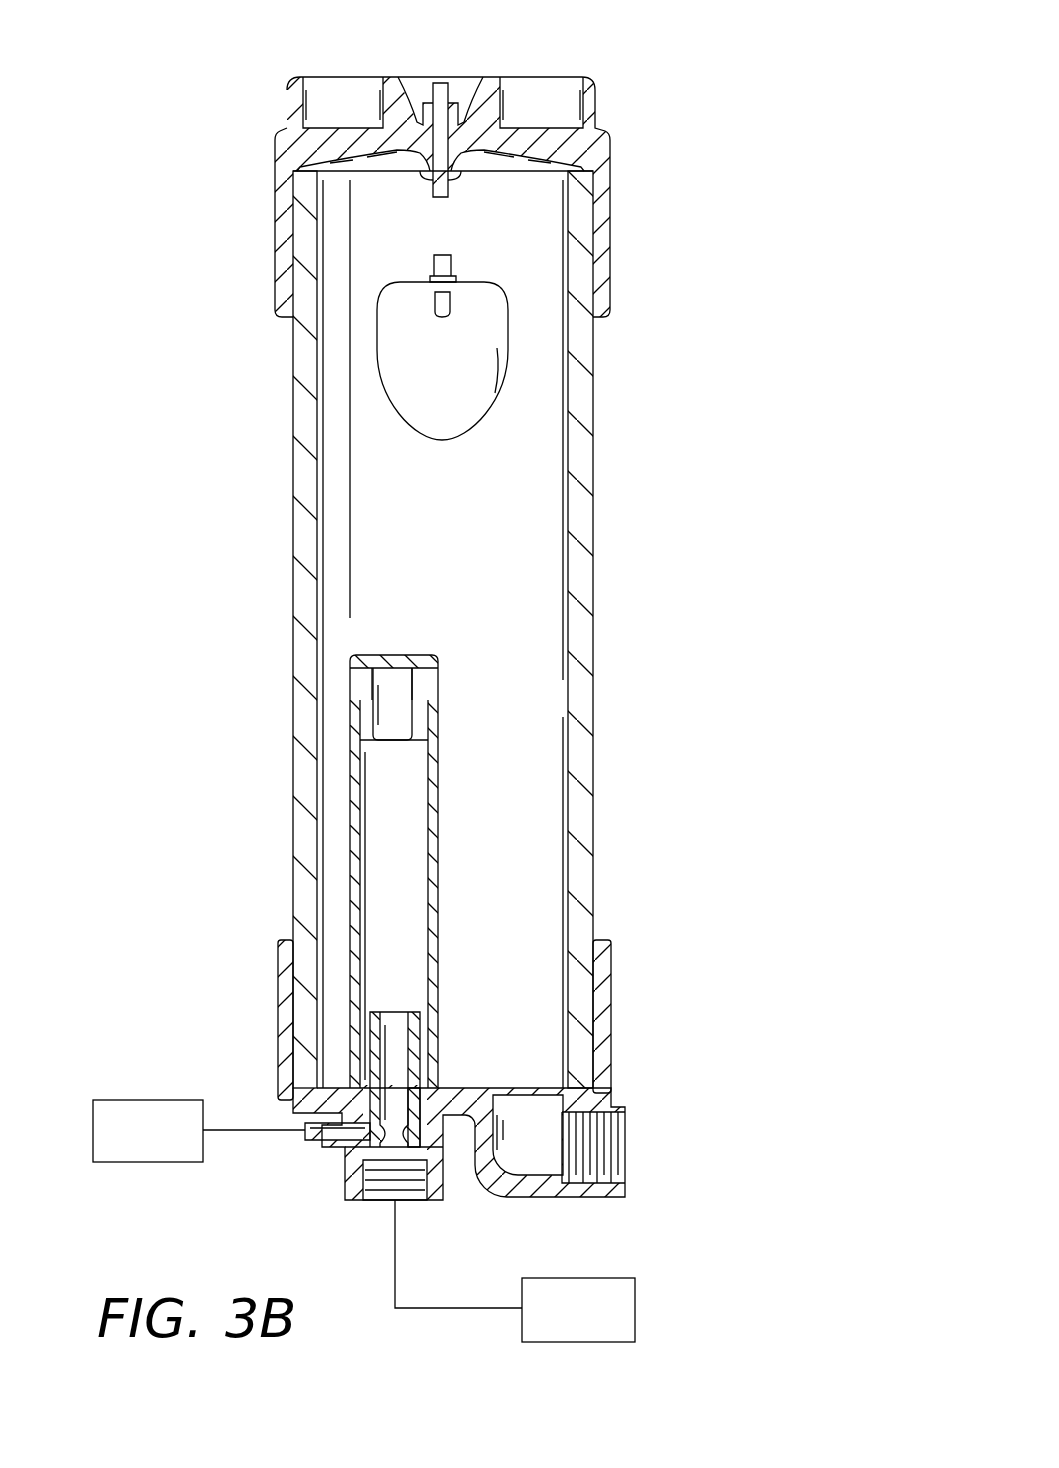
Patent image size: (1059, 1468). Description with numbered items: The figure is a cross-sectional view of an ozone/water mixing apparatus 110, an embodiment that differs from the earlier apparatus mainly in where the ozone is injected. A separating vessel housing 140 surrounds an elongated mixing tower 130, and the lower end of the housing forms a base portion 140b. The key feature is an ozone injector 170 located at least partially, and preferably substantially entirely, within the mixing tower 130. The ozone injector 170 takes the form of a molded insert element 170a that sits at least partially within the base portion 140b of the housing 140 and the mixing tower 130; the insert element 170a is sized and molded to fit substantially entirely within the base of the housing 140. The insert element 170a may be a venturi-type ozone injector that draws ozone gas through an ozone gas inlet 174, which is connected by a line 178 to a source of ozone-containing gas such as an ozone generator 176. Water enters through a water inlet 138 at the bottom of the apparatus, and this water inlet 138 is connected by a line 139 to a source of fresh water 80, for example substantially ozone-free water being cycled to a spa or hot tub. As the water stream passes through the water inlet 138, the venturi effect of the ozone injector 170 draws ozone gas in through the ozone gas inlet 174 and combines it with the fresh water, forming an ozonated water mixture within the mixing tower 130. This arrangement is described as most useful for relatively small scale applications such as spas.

The ozone/water mixing apparatus 110 is at (686, 195).
The separating vessel housing 140 is at (600, 494).
The base portion 140b is at (612, 982).
The mixing tower 130 is at (470, 925).
The ozone injector 170 is at (372, 995).
The molded insert element 170a is at (420, 1080).
The ozone gas inlet 174 is at (307, 1123).
The ozone generator 176 is at (167, 1142).
The line 178 is at (260, 1133).
The water inlet 138 is at (395, 1147).
The line 139 is at (395, 1256).
The source of fresh water 80 is at (596, 1330).